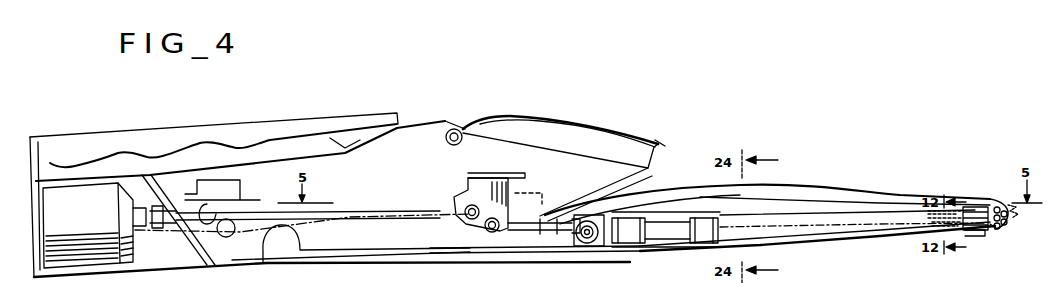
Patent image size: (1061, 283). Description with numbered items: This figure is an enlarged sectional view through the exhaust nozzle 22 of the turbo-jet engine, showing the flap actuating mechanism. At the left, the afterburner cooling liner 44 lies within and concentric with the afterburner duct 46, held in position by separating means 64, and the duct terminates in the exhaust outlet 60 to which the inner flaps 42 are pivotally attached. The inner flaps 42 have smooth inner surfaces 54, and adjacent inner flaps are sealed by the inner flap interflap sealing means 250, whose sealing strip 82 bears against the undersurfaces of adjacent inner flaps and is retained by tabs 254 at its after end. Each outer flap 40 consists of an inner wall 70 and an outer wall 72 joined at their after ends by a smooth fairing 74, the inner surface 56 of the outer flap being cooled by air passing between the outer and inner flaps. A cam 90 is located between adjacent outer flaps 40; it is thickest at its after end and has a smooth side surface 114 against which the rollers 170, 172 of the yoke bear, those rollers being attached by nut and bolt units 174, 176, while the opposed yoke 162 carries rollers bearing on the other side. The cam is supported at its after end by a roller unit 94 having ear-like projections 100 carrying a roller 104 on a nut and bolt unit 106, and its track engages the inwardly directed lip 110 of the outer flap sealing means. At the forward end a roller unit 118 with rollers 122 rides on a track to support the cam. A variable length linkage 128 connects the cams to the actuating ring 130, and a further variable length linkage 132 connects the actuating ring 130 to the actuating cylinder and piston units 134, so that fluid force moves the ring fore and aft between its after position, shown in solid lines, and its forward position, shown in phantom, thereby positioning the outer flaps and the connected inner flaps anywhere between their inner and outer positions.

The exhaust nozzle 22 is at (914, 170).
The outer flaps 40 is at (912, 193).
The inner flaps 42 is at (606, 129).
The afterburner cooling liner 44 is at (110, 158).
The afterburner duct 46 is at (295, 158).
The inner surface of inner flaps 54 is at (566, 121).
The inner surface of outer flaps 56 is at (780, 187).
The exhaust outlet 60 is at (448, 128).
The separating means 64 is at (337, 146).
The inner wall 70 is at (872, 185).
The outer wall 72 is at (882, 246).
The smooth fairing 74 is at (1014, 215).
The inner flap interflap sealing strip 82 is at (535, 116).
The cam 90 is at (803, 214).
The roller unit 94 is at (1003, 228).
The ear-like projection 100 is at (1002, 206).
The roller 104 is at (982, 237).
The nut and bolt unit 106 is at (983, 203).
The inwardly directed lip 110 is at (815, 238).
The smooth side surface 114 is at (840, 219).
The roller unit 118 is at (646, 183).
The roller 122 is at (586, 220).
The variable length linkage 128 is at (538, 222).
The actuating ring 130 is at (232, 176).
The variable length linkage 132 is at (166, 238).
The actuating cylinder and piston unit 134 is at (86, 221).
The opposed yoke 162 is at (664, 208).
The roller 170 is at (632, 243).
The roller 172 is at (718, 222).
The nut and bolt unit 174 is at (570, 255).
The nut and bolt unit 176 is at (591, 246).
The inner flap interflap sealing means 250 is at (586, 154).
The tabs 254 is at (672, 146).